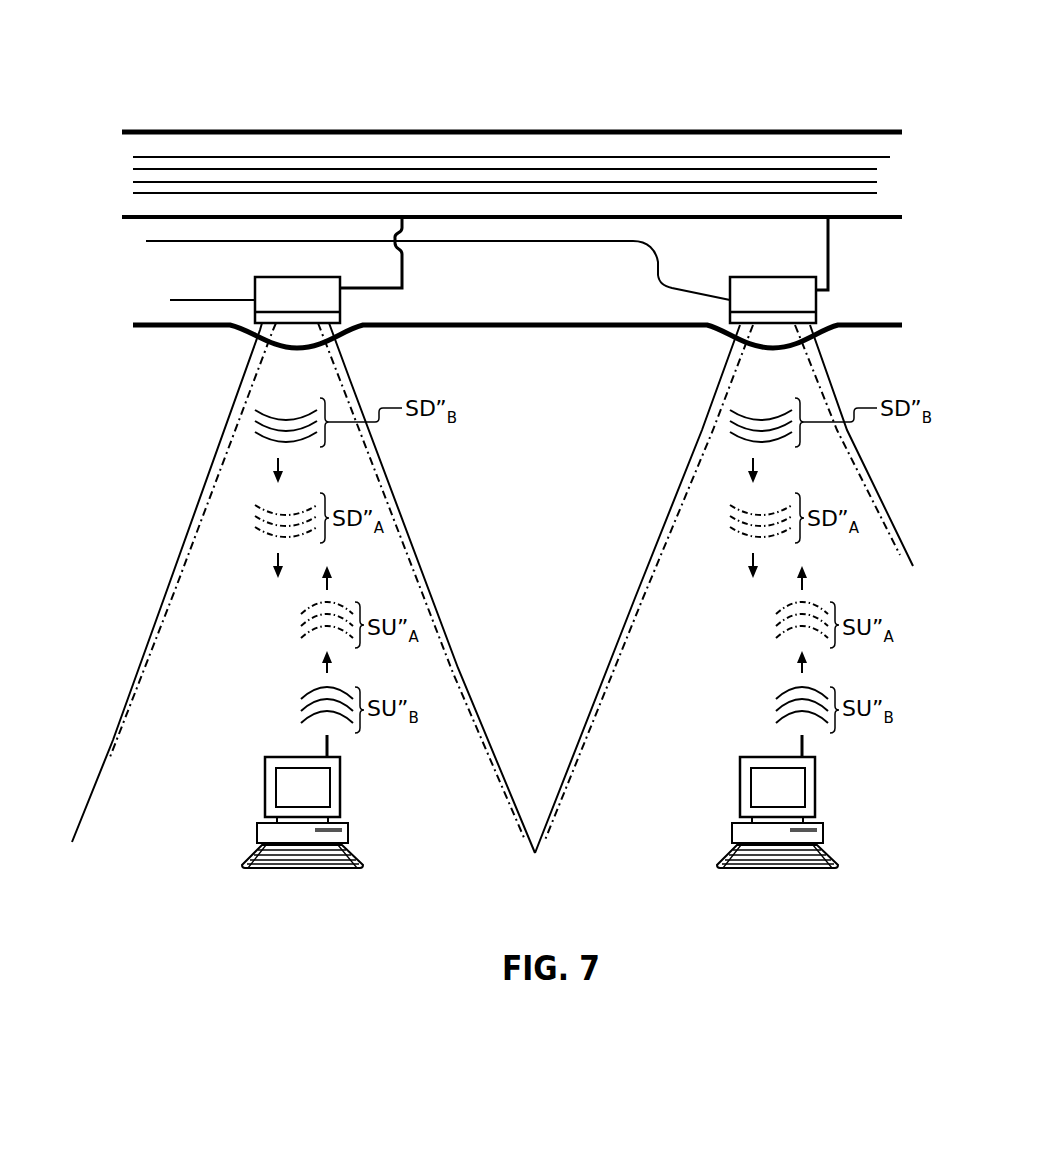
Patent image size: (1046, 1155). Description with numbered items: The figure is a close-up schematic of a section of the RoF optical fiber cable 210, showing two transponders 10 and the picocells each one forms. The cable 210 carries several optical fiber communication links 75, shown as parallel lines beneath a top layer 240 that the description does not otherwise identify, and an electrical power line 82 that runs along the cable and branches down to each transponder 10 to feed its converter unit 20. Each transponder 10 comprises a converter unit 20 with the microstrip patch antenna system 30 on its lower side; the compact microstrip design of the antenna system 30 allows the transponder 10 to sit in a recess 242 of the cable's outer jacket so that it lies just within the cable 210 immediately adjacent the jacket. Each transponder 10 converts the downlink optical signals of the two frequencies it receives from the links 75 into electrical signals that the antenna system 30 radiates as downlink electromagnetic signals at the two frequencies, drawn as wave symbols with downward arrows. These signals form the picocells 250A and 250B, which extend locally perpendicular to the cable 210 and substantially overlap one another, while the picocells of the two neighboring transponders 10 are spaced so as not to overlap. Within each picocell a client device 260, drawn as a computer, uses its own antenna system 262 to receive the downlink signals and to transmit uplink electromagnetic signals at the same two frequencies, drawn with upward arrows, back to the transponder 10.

The RoF optical fiber cable 210 is at (243, 86).
The top layer / substrate 240 is at (767, 132).
The optical fiber communication links 75 is at (133, 143).
The electrical power line 82 is at (158, 218).
The RoF planar transponder 10 is at (243, 278).
The converter unit 20 is at (303, 277).
The microstrip patch antenna system 30 is at (340, 325).
The recesses 242 is at (253, 340).
The picocell 250A is at (230, 468).
The picocell 250B is at (178, 552).
The client devices 260 is at (340, 782).
The antenna systems 262 is at (323, 745).